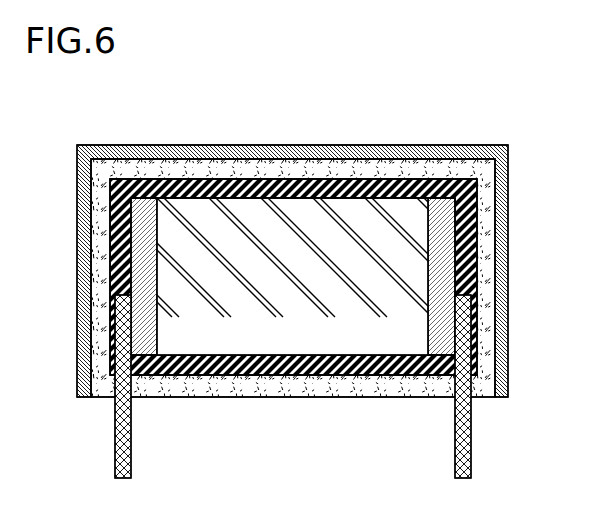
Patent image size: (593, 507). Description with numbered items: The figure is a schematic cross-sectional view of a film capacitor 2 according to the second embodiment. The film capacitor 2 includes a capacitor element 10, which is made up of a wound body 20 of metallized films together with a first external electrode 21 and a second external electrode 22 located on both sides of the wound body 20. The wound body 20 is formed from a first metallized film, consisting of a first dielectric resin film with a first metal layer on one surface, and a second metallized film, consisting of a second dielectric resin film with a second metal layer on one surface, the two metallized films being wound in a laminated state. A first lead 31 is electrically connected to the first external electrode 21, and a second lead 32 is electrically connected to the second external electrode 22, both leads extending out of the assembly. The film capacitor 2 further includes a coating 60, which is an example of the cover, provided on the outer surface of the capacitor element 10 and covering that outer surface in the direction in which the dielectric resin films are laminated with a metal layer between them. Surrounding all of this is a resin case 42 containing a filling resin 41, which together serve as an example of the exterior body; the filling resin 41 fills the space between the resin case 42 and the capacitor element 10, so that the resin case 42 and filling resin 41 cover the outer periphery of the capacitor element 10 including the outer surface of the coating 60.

The film capacitor 2 is at (302, 274).
The capacitor element 10 is at (463, 220).
The wound body 20 is at (185, 243).
The first external electrode 21 is at (137, 267).
The second external electrode 22 is at (443, 268).
The first lead 31 is at (117, 448).
The second lead 32 is at (471, 450).
The filling resin 41 is at (374, 167).
The resin case 42 is at (455, 152).
The coating 60 is at (208, 197).